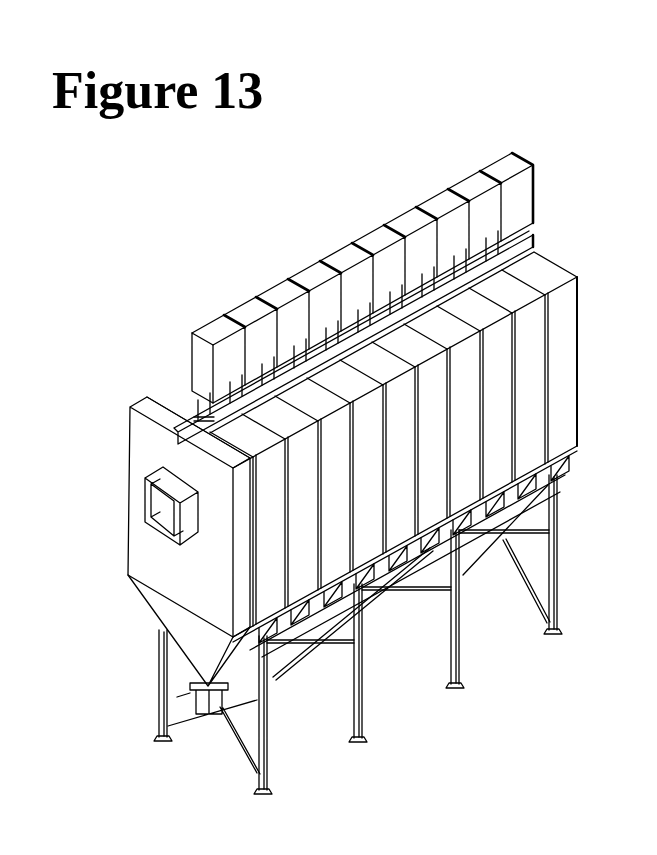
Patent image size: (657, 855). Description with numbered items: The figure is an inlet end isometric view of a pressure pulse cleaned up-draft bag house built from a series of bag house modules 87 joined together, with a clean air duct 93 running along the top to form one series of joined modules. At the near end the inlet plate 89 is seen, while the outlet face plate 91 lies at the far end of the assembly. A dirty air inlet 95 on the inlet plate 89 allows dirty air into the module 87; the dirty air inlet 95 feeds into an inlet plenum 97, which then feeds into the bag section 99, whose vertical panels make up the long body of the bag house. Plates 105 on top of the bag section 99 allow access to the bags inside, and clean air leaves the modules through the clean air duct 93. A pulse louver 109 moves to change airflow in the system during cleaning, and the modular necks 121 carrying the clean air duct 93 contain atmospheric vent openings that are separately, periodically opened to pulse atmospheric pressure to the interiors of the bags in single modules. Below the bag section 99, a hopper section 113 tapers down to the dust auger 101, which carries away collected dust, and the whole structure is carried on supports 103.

The module 87 is at (518, 358).
The inlet plate 89 is at (143, 550).
The outlet face plate 91 is at (580, 430).
The clean air exit duct 93 is at (467, 180).
The dirty air inlet 95 is at (150, 503).
The inlet plenum 97 is at (168, 392).
The bag section 99 is at (560, 392).
The dust auger 101 is at (225, 688).
The supports 103 is at (362, 703).
The plates 105 is at (563, 266).
The pulse louver 109 is at (541, 233).
The hopper section 113 is at (152, 609).
The modular necks 121 is at (215, 418).